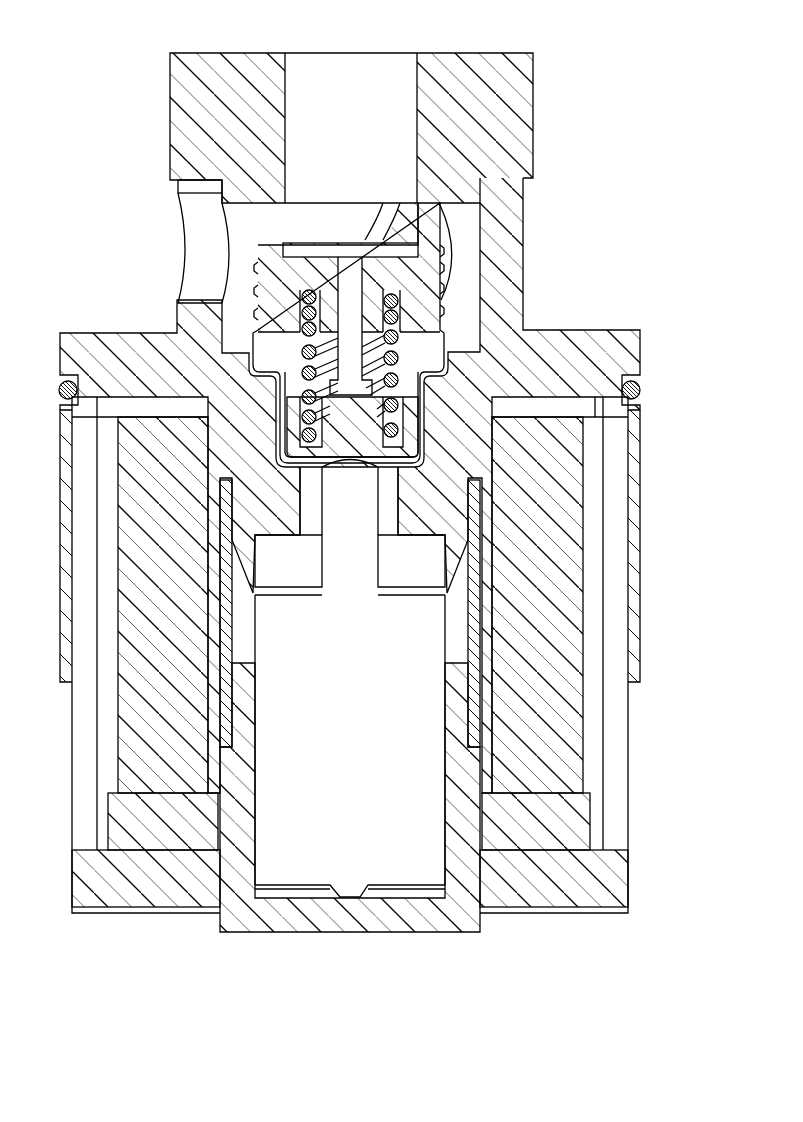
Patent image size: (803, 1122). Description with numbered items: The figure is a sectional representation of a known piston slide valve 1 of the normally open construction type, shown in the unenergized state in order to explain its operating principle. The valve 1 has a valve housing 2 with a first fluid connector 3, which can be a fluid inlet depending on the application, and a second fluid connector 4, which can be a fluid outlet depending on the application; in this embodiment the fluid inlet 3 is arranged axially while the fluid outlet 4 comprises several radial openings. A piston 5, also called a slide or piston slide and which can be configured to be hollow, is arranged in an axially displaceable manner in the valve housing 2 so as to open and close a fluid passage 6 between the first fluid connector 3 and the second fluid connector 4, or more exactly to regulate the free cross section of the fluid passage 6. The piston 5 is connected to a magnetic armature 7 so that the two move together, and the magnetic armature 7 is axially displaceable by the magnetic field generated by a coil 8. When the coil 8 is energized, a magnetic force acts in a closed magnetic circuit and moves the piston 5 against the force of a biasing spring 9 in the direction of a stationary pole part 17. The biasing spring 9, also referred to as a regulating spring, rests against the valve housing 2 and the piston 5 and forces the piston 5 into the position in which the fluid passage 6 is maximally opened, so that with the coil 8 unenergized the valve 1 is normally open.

The piston slide valve 1 is at (636, 98).
The valve housing 2 is at (641, 329).
The first fluid connector 3 is at (348, 66).
The second fluid connector 4 is at (198, 252).
The piston 5 is at (252, 278).
The fluid passage 6 is at (250, 228).
The magnetic armature 7 is at (300, 867).
The coil 8 is at (565, 492).
The biasing spring 9 is at (393, 337).
The stationary pole part 17 is at (410, 496).